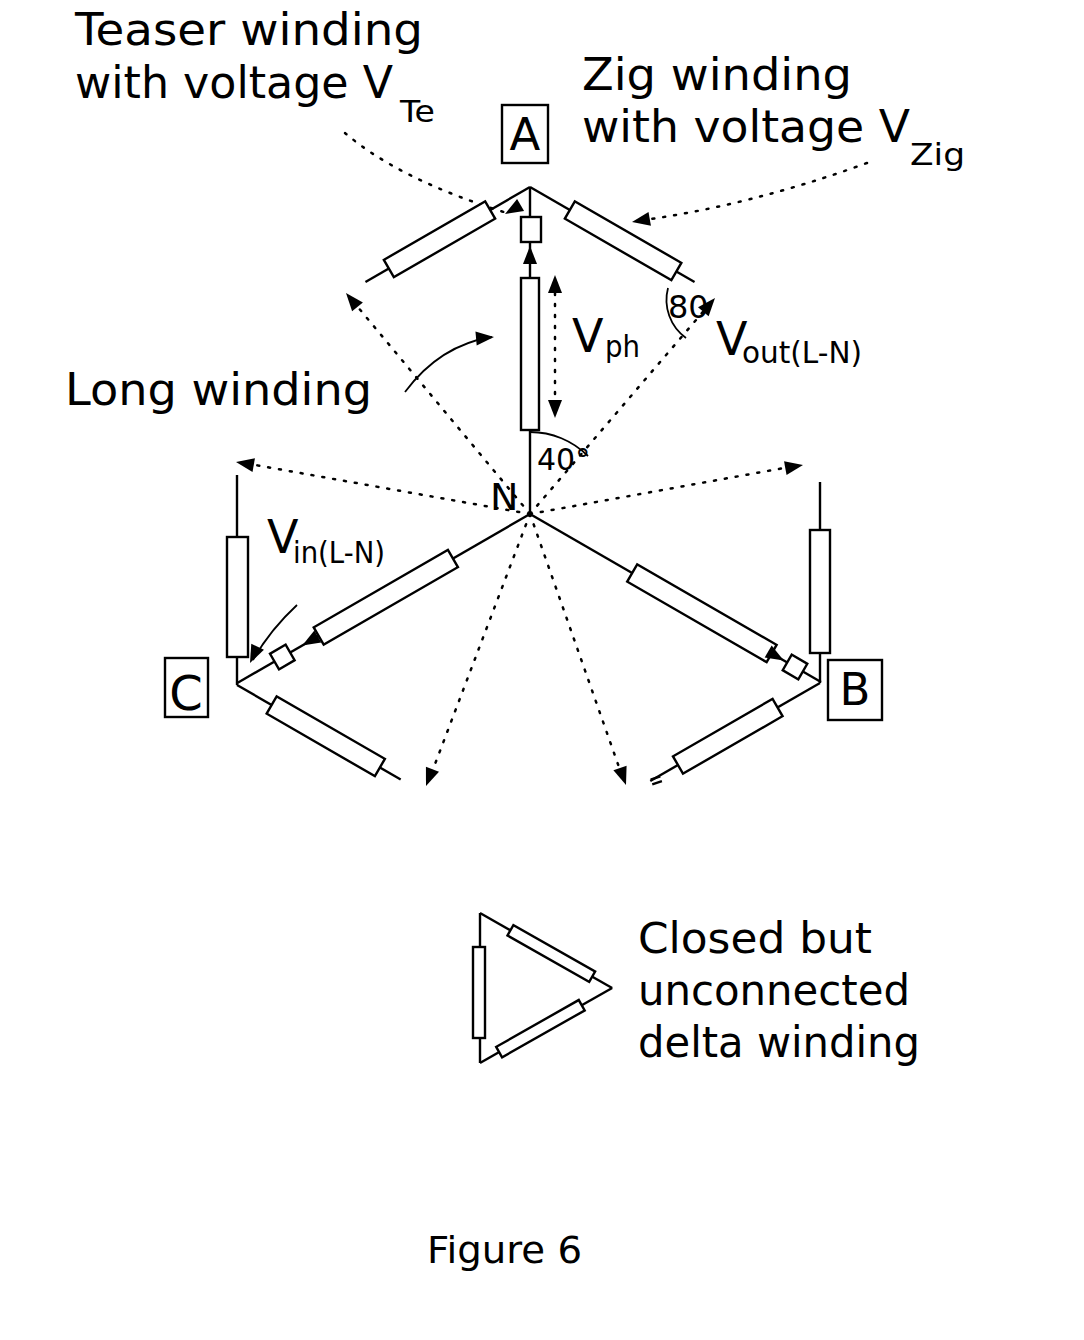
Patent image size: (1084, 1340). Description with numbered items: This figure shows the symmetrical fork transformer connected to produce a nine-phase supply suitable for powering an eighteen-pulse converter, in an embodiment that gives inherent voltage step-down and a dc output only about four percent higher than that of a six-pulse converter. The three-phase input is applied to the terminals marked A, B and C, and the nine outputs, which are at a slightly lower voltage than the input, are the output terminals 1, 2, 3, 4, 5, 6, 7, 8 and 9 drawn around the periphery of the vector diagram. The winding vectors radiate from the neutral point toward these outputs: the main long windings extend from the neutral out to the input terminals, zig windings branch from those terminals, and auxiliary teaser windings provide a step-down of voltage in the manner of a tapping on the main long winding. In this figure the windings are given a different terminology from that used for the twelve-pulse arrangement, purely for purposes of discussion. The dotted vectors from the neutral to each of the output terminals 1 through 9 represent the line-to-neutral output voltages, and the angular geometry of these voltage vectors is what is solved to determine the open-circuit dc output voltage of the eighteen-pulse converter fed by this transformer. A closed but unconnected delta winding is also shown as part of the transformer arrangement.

The output terminal 1 is at (542, 350).
The output terminal 2 is at (637, 346).
The output terminal 3 is at (705, 563).
The output terminal 4 is at (675, 597).
The output terminal 5 is at (677, 674).
The output terminal 6 is at (381, 674).
The output terminal 7 is at (383, 598).
The output terminal 8 is at (363, 562).
The output terminal 9 is at (423, 346).